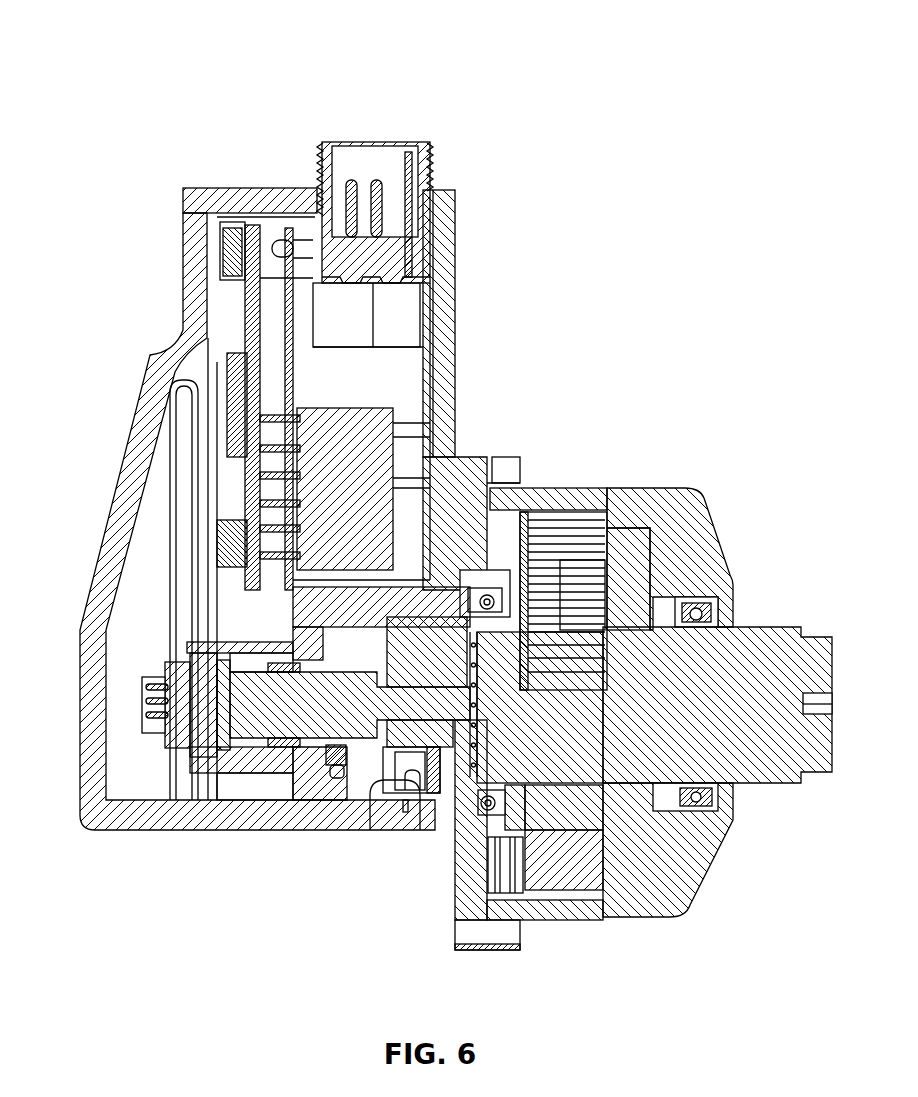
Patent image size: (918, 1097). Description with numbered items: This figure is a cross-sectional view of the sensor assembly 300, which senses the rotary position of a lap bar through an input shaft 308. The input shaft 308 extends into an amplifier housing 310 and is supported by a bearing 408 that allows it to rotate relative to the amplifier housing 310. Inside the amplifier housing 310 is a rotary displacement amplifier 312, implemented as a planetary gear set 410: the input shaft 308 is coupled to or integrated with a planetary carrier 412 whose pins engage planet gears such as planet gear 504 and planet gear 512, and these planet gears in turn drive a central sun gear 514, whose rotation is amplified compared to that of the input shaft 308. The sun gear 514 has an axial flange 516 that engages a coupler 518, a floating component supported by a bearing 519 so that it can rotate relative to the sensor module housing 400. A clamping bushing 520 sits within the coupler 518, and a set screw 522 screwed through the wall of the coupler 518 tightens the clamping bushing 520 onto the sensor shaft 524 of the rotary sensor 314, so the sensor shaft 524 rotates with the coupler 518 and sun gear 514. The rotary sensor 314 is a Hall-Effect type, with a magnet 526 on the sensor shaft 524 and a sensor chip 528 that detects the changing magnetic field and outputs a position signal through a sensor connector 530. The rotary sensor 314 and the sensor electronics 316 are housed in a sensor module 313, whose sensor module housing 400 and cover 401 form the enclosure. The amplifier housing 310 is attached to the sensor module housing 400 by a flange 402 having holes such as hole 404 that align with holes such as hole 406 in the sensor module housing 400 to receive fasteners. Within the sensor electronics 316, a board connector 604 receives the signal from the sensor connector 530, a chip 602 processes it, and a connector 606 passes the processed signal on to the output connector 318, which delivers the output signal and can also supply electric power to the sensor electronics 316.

The sensor assembly 300 is at (160, 47).
The input shaft 308 is at (790, 630).
The amplifier housing 310 is at (657, 490).
The rotary displacement amplifier 312 is at (546, 517).
The sensor module 313 is at (278, 190).
The rotary sensor 314 is at (318, 775).
The sensor electronics 316 is at (233, 306).
The output connector 318 is at (372, 160).
The sensor module housing 400 is at (456, 298).
The cover 401 is at (120, 392).
The flange 402 is at (508, 456).
The hole 404 is at (500, 932).
The hole 406 is at (472, 947).
The bearing 408 is at (690, 607).
The planetary gear set 410 is at (573, 550).
The planetary carrier 412 is at (612, 530).
The planet gear 504 is at (588, 597).
The planet gear 512 is at (580, 884).
The sun gear 514 is at (543, 713).
The flange 516 is at (486, 812).
The coupler 518 is at (420, 645).
The bearing 519 is at (500, 603).
The clamping bushing 520 is at (394, 800).
The set screw 522 is at (413, 742).
The sensor shaft 524 is at (342, 763).
The magnet 526 is at (247, 733).
The sensor chip 528 is at (203, 727).
The sensor connector 530 is at (142, 705).
The chip 602 is at (227, 405).
The board connector 604 is at (222, 545).
The connector 606 is at (348, 412).